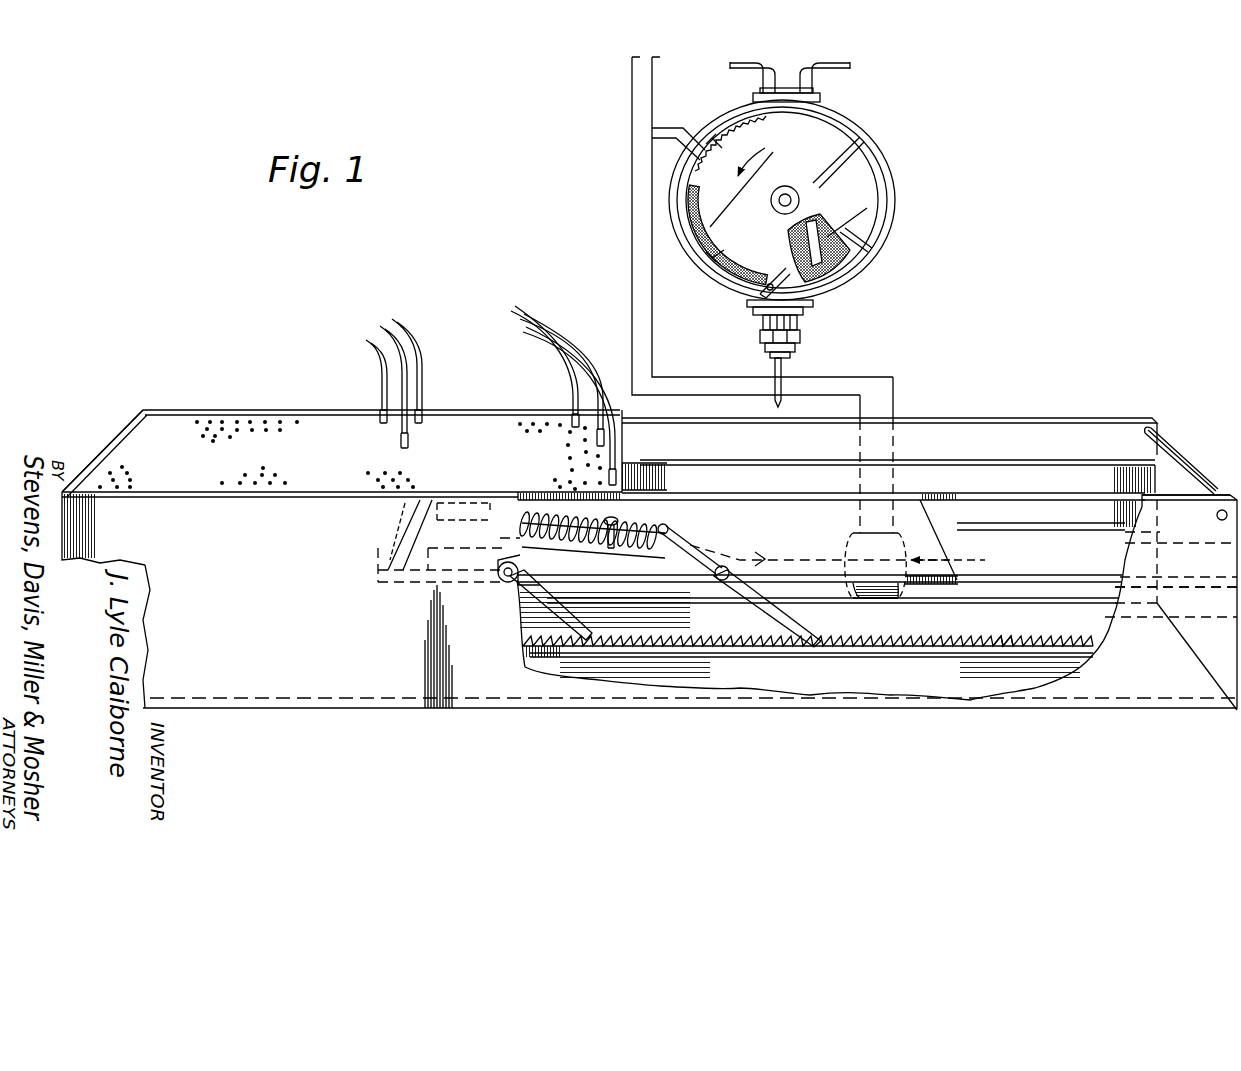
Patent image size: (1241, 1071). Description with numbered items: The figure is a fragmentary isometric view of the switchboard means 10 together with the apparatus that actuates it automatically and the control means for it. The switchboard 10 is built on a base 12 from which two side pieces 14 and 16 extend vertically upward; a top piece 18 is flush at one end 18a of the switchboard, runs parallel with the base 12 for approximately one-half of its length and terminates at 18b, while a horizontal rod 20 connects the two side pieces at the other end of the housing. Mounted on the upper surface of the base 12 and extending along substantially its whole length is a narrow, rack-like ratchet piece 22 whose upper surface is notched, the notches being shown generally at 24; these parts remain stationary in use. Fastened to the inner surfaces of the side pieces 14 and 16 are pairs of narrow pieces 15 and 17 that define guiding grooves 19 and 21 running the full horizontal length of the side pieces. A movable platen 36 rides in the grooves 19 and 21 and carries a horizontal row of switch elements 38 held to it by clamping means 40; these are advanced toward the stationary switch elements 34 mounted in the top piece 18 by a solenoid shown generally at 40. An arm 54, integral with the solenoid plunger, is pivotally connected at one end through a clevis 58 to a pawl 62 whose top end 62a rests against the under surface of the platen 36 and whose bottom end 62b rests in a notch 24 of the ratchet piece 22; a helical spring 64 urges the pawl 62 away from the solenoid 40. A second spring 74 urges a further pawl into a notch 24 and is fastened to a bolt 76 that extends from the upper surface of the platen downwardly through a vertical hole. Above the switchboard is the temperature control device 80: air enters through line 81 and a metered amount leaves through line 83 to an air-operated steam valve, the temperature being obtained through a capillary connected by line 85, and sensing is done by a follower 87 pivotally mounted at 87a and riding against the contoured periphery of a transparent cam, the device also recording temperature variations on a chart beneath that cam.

The switchboard means 10 is at (356, 665).
The base 12 is at (1200, 659).
The side piece 14 is at (1008, 443).
The narrow pieces 15 is at (1165, 453).
The side piece 16 is at (1122, 687).
The narrow pieces 17 is at (1160, 533).
The top piece 18 is at (208, 421).
The end of top piece 18a is at (118, 437).
The terminal end of top piece 18b is at (645, 455).
The guiding groove 19 is at (1168, 491).
The horizontal rod 20 is at (1181, 471).
The guiding groove 21 is at (1140, 580).
The ratchet piece 22 is at (950, 652).
The notches 24 is at (1004, 645).
The stationary switch elements 34 is at (403, 436).
The movable platen 36 is at (906, 515).
The switch elements 38 is at (385, 515).
The solenoid 40 is at (378, 549).
The arm 54 is at (812, 565).
The clevis 58 is at (764, 561).
The pawl 62 is at (767, 600).
The top end of pawl 62a is at (667, 530).
The bottom end of pawl 62b is at (824, 638).
The helical spring 64 is at (630, 540).
The spring 74 is at (535, 545).
The bolt 76 is at (608, 519).
The temperature control device 80 is at (893, 168).
The line 81 is at (850, 63).
The line 83 is at (738, 62).
The line 85 is at (784, 373).
The follower 87 is at (820, 220).
The pivot mounting of follower 87a is at (756, 298).